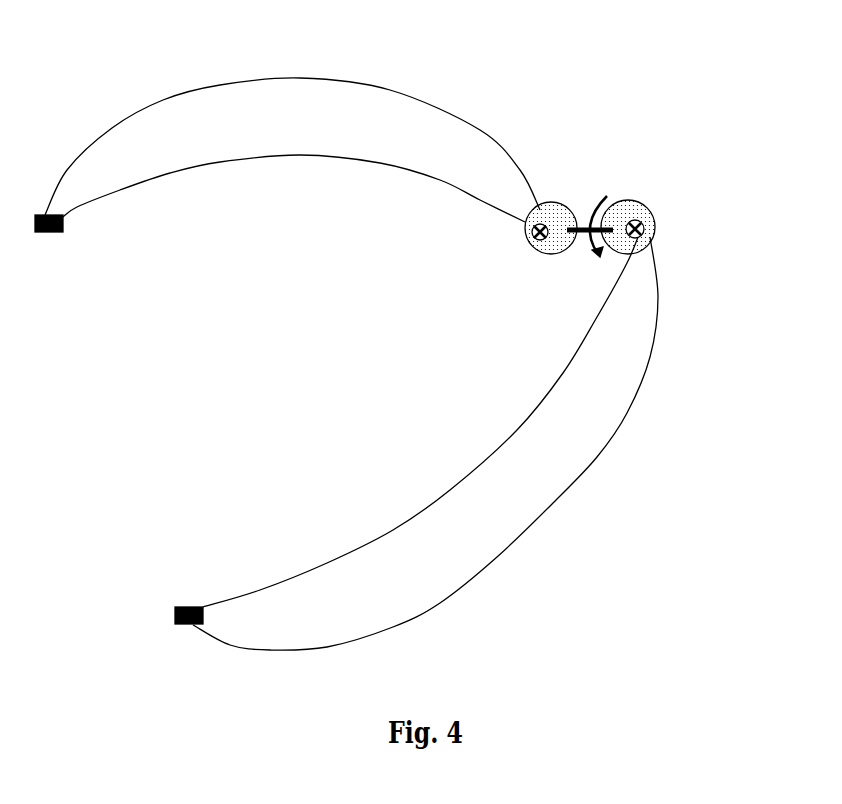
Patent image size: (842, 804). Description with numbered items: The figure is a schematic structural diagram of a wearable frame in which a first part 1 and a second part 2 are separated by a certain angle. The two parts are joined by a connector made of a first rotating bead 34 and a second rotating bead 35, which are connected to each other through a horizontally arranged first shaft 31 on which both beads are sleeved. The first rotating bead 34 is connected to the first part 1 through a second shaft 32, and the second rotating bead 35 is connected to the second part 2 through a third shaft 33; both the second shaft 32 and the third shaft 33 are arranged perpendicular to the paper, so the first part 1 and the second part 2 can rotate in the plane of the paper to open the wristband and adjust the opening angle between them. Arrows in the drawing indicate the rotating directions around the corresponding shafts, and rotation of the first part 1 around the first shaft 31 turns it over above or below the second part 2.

The first part 1 is at (580, 457).
The second part 2 is at (373, 112).
The first shaft 31 is at (628, 247).
The second shaft 32 is at (643, 228).
The third shaft 33 is at (548, 202).
The first rotating bead 34 is at (647, 202).
The second rotating bead 35 is at (572, 207).